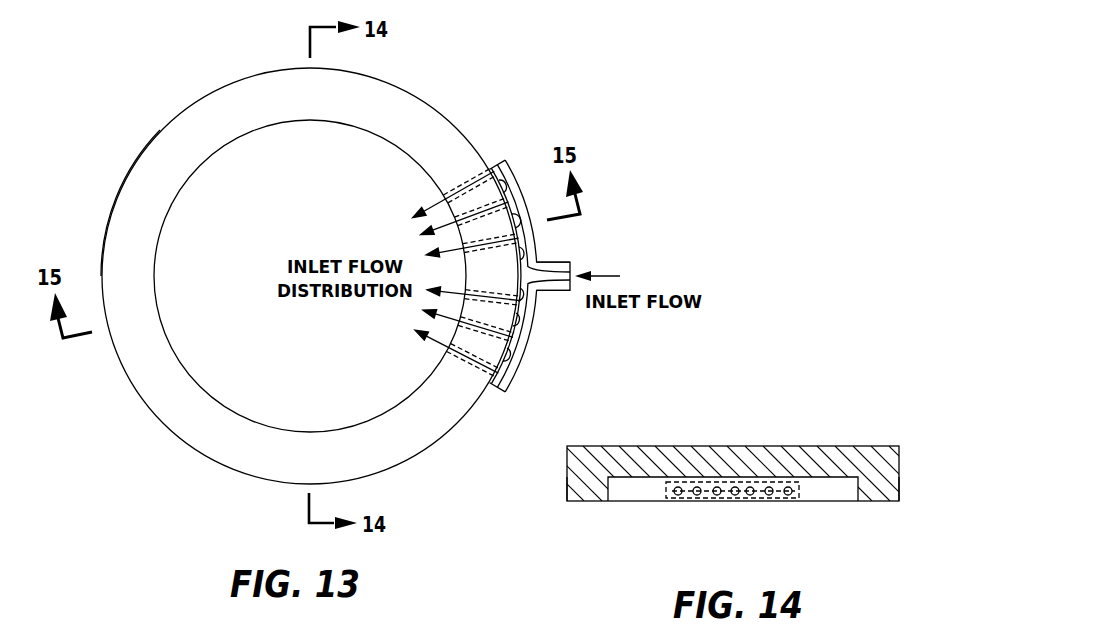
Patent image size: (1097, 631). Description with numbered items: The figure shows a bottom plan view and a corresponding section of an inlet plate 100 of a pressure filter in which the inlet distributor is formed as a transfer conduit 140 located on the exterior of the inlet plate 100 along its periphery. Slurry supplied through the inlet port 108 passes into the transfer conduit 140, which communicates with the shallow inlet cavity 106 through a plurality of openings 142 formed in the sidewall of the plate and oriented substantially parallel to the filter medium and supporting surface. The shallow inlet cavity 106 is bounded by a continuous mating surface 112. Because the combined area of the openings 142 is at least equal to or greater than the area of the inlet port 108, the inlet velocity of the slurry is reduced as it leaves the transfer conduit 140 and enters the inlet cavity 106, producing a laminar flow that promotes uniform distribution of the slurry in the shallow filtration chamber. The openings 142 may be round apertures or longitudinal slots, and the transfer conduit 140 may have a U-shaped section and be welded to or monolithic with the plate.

In FIG. 13, the inlet plate 100 is at (183, 438).
In FIG. 14, the inlet plate 100 is at (842, 446).
In FIG. 13, the shallow inlet cavity 106 is at (310, 276).
In FIG. 14, the shallow inlet cavity 106 is at (637, 478).
In FIG. 13, the inlet port 108 is at (558, 258).
In FIG. 14, the inlet port 108 is at (725, 495).
In FIG. 13, the continuous mating surface 112 is at (157, 377).
In FIG. 14, the continuous mating surface 112 is at (588, 502).
In FIG. 13, the transfer conduit 140 is at (527, 357).
In FIG. 14, the transfer conduit 140 is at (782, 497).
In FIG. 13, the openings 142 is at (460, 196).
In FIG. 14, the openings 142 is at (697, 495).